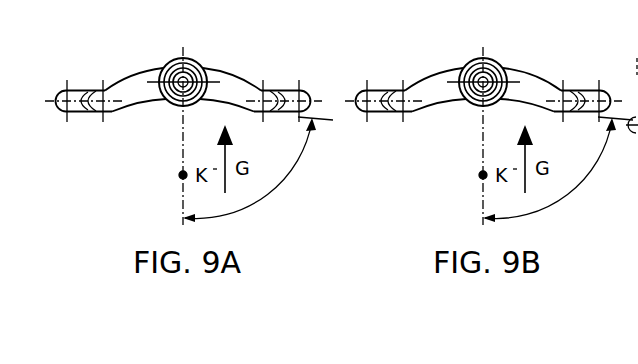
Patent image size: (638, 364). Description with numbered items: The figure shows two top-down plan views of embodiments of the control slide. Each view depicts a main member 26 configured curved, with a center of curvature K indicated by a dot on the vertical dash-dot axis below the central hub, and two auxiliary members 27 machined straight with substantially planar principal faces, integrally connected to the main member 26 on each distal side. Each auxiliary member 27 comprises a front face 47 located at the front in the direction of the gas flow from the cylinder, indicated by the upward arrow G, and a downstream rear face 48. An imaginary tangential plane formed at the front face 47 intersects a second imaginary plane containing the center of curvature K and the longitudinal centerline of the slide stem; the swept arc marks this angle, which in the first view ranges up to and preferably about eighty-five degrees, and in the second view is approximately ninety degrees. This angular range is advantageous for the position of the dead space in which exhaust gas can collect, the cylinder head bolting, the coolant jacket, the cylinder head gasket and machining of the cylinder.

In FIG. 9A, the main member 26 is at (231, 76).
In FIG. 9B, the main member 26 is at (531, 76).
In FIG. 9A, the auxiliary member 27 is at (303, 89).
In FIG. 9B, the auxiliary member 27 is at (370, 89).
In FIG. 9A, the front face 47 is at (86, 113).
In FIG. 9A, the rear face 48 is at (74, 89).